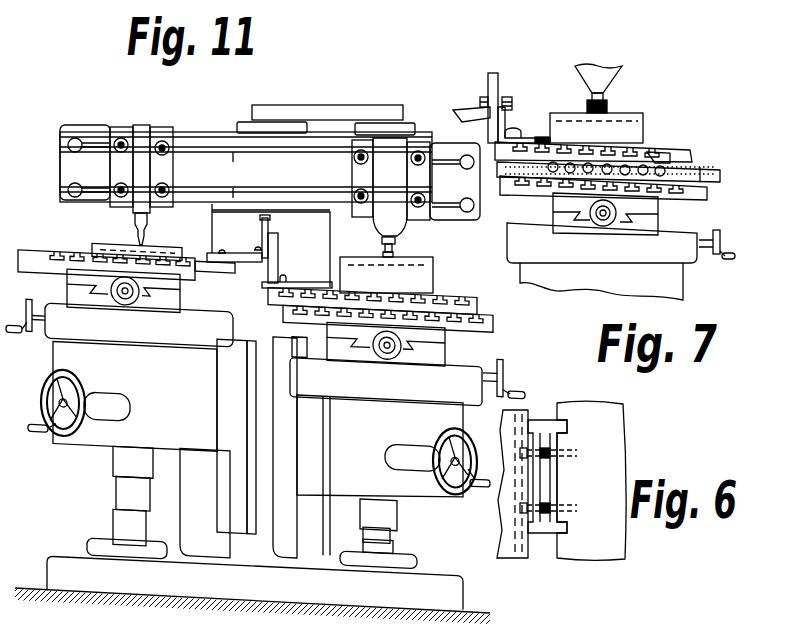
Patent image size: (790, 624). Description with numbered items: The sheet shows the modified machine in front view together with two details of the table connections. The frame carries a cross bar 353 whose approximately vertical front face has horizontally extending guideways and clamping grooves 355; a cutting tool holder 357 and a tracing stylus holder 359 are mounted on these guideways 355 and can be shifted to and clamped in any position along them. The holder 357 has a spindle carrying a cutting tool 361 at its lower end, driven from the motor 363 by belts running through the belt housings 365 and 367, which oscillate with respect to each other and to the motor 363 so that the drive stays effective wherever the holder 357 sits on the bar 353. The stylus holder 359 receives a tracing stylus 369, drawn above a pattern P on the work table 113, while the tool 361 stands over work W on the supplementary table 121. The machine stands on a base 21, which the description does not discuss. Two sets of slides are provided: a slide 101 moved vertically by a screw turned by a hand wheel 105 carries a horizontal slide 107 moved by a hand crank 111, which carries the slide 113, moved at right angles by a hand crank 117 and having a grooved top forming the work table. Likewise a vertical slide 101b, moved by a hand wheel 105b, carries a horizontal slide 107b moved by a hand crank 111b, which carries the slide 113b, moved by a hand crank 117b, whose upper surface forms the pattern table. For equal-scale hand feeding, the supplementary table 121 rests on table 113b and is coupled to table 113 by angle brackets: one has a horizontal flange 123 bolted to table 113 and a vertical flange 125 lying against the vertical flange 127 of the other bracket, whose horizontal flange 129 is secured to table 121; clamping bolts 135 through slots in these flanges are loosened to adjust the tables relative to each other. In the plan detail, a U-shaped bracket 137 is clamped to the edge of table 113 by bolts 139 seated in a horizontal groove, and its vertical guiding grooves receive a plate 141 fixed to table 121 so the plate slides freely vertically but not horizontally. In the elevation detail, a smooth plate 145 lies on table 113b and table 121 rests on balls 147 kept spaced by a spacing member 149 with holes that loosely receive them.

In FIG. 11, the base 21 is at (252, 590).
In FIG. 11, the slide 101 is at (108, 432).
In FIG. 11, the vertical slide 101b is at (418, 488).
In FIG. 7, the vertical slide 101b is at (683, 286).
In FIG. 11, the hand wheel 105 is at (38, 434).
In FIG. 11, the hand wheel 105b is at (438, 438).
In FIG. 11, the horizontal slide 107 is at (70, 293).
In FIG. 11, the horizontal slide 107b is at (432, 362).
In FIG. 7, the horizontal slide 107b is at (650, 227).
In FIG. 11, the hand crank 111 is at (16, 335).
In FIG. 11, the hand crank 111b is at (507, 364).
In FIG. 7, the hand crank 111b is at (721, 243).
In FIG. 11, the work table 113 is at (42, 258).
In FIG. 6, the work table 113 is at (503, 548).
In FIG. 11, the pattern table 113b is at (494, 320).
In FIG. 7, the pattern table 113b is at (701, 194).
In FIG. 11, the hand crank 117 is at (139, 290).
In FIG. 11, the hand crank 117b is at (375, 339).
In FIG. 7, the hand crank 117b is at (588, 231).
In FIG. 11, the supplementary table 121 is at (468, 303).
In FIG. 7, the supplementary table 121 is at (690, 154).
In FIG. 6, the supplementary table 121 is at (585, 548).
In FIG. 11, the horizontal flange 123 is at (250, 262).
In FIG. 7, the horizontal flange 123 is at (476, 115).
In FIG. 11, the vertical flange 125 is at (262, 222).
In FIG. 7, the vertical flange 125 is at (488, 83).
In FIG. 11, the vertical flange 127 is at (280, 254).
In FIG. 7, the vertical flange 127 is at (504, 119).
In FIG. 11, the horizontal flange 129 is at (290, 286).
In FIG. 7, the horizontal flange 129 is at (535, 140).
In FIG. 11, the clamping bolts 135 is at (258, 248).
In FIG. 7, the clamping bolts 135 is at (508, 100).
In FIG. 6, the bracket 137 is at (540, 420).
In FIG. 6, the clamping bolts 139 is at (549, 460).
In FIG. 6, the plate 141 is at (553, 494).
In FIG. 7, the plate 145 is at (722, 177).
In FIG. 7, the balls 147 is at (652, 158).
In FIG. 7, the spacing member 149 is at (708, 168).
In FIG. 11, the cross bar 353 is at (443, 207).
In FIG. 11, the guideways 355 is at (235, 194).
In FIG. 11, the cutting tool holder 357 is at (380, 222).
In FIG. 11, the tracing stylus holder 359 is at (132, 206).
In FIG. 11, the cutting tool 361 is at (396, 250).
In FIG. 11, the motor 363 is at (245, 128).
In FIG. 11, the belt housing 365 is at (311, 116).
In FIG. 11, the belt housing 367 is at (362, 129).
In FIG. 11, the tracing stylus 369 is at (142, 255).
In FIG. 11, the workpiece P is at (108, 247).
In FIG. 11, the workpiece W is at (436, 276).
In FIG. 7, the workpiece W is at (644, 125).